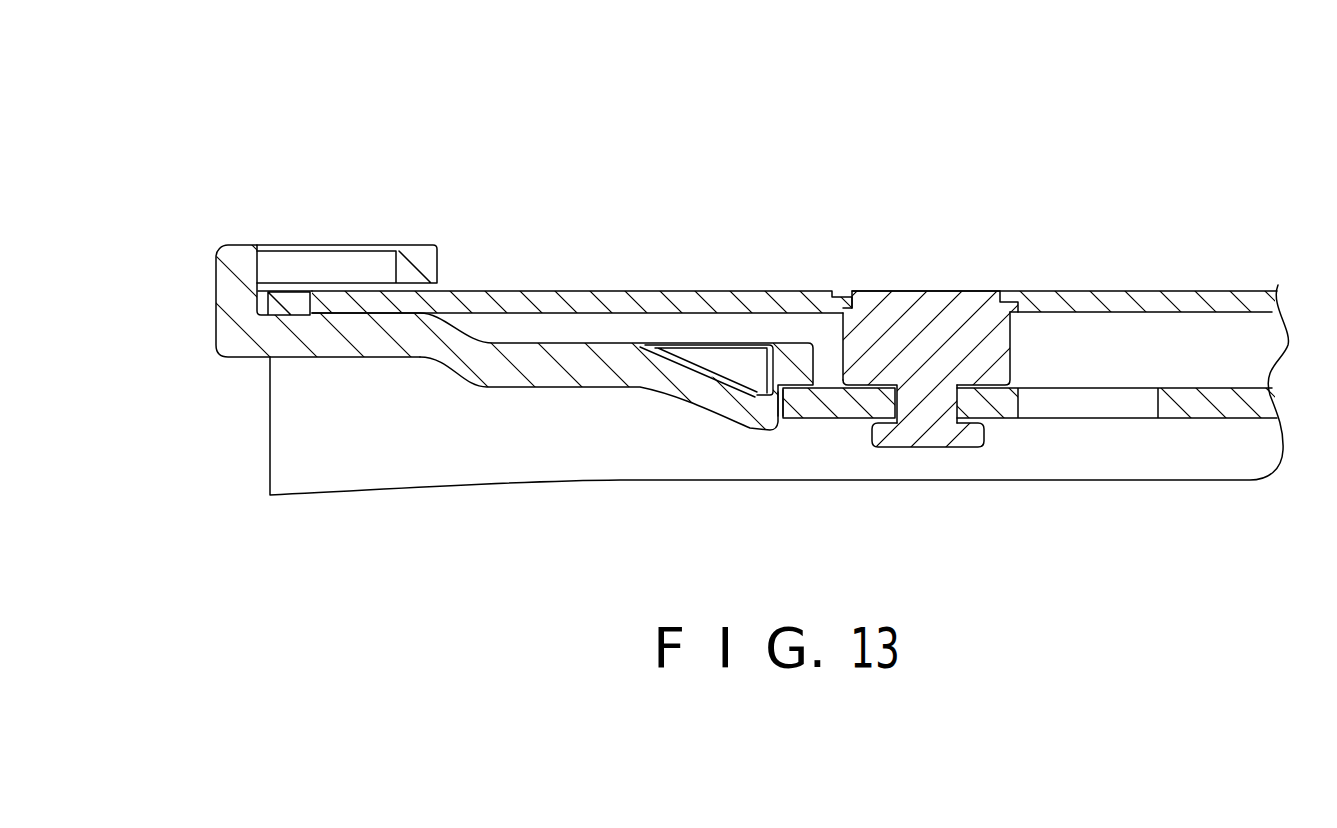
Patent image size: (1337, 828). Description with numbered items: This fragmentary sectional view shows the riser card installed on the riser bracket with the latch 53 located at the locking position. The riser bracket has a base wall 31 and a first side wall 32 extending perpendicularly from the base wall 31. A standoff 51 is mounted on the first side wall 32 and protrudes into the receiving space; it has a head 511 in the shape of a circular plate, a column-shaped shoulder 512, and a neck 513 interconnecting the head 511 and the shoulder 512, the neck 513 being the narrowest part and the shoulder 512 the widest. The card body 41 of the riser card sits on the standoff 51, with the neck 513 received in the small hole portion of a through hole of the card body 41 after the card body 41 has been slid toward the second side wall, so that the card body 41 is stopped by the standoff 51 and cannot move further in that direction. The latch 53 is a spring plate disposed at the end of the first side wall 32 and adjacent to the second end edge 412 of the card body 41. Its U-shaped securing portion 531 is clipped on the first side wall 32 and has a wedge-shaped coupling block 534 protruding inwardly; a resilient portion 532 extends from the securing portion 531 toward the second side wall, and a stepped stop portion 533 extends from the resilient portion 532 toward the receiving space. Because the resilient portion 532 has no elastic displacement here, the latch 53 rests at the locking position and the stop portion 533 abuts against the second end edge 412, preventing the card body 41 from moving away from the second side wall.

The base wall 31 is at (349, 442).
The first side wall 32 is at (1150, 307).
The card body 41 is at (852, 405).
The second end edge 412 is at (772, 418).
The standoff 51 is at (922, 300).
The head 511 is at (962, 440).
The shoulder 512 is at (990, 352).
The neck 513 is at (938, 397).
The latch 53 is at (233, 245).
The securing portion 531 is at (240, 300).
The resilient portion 532 is at (545, 367).
The stop portion 533 is at (758, 408).
The coupling block 534 is at (327, 303).